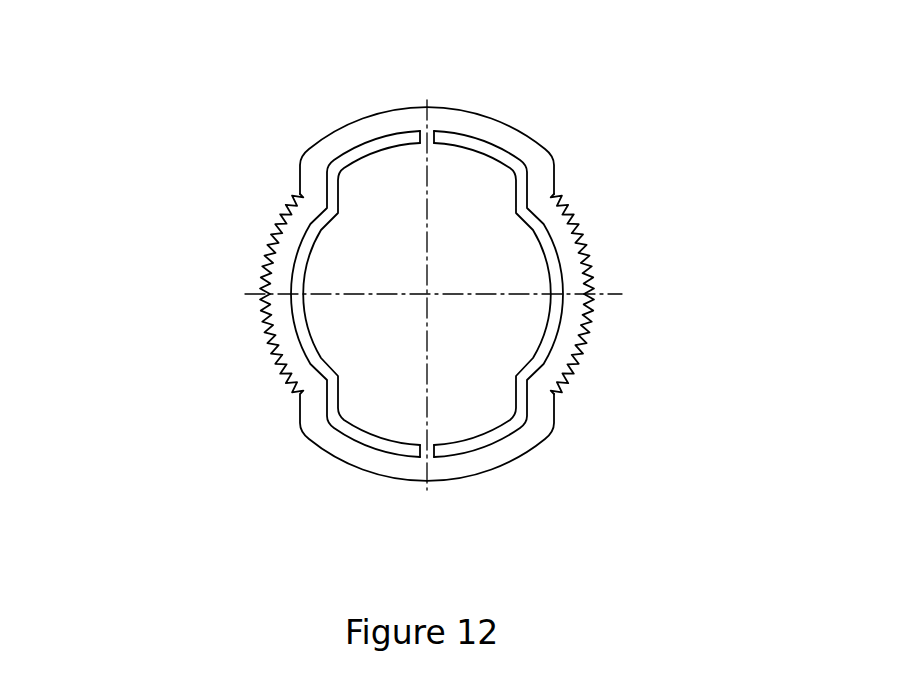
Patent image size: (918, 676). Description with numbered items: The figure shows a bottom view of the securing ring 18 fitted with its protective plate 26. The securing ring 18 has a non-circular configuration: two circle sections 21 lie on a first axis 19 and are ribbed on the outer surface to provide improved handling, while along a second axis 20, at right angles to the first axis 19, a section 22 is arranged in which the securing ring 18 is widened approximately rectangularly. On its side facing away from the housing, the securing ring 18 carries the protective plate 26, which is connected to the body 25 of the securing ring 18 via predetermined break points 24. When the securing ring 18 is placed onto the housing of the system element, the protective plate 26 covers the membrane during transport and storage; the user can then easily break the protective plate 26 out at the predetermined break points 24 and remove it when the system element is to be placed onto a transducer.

The securing ring 18 is at (420, 285).
The first axis 19 is at (612, 293).
The second axis 20 is at (432, 195).
The circle sections 21 is at (573, 247).
The section 22 is at (355, 133).
The predetermined break points 24 is at (436, 133).
The body 25 is at (540, 180).
The protective plate 26 is at (378, 360).